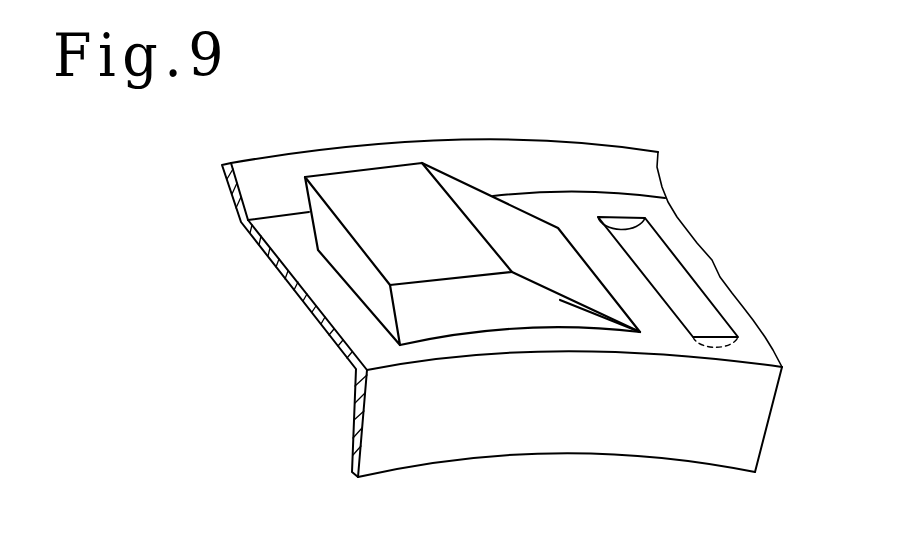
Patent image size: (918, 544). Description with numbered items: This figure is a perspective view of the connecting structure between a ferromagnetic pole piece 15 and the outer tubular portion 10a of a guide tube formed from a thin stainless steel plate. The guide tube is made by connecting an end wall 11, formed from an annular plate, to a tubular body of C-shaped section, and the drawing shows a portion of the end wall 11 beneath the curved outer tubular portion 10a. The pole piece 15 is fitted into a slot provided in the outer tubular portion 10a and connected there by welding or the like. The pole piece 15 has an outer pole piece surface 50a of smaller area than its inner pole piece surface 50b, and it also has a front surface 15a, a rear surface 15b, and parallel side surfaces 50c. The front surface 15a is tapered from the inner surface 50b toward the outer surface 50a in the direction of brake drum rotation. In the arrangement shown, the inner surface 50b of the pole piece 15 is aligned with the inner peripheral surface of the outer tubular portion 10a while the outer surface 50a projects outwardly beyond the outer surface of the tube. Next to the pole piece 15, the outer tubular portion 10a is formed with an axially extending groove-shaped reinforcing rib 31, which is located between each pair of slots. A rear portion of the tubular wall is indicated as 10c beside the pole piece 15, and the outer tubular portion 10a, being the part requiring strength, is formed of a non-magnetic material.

The ferromagnetic pole piece 15 is at (429, 239).
The outer pole piece surface 50a is at (415, 180).
The front surface 15a is at (350, 270).
The rear surface 15b is at (528, 227).
The inner pole piece surface 50b is at (492, 333).
The side surfaces 50c is at (572, 318).
The rear portion of base plate 10c is at (257, 198).
The outer tubular portion 10a is at (352, 333).
The end wall 11 is at (435, 450).
The reinforcing rib 31 is at (695, 302).